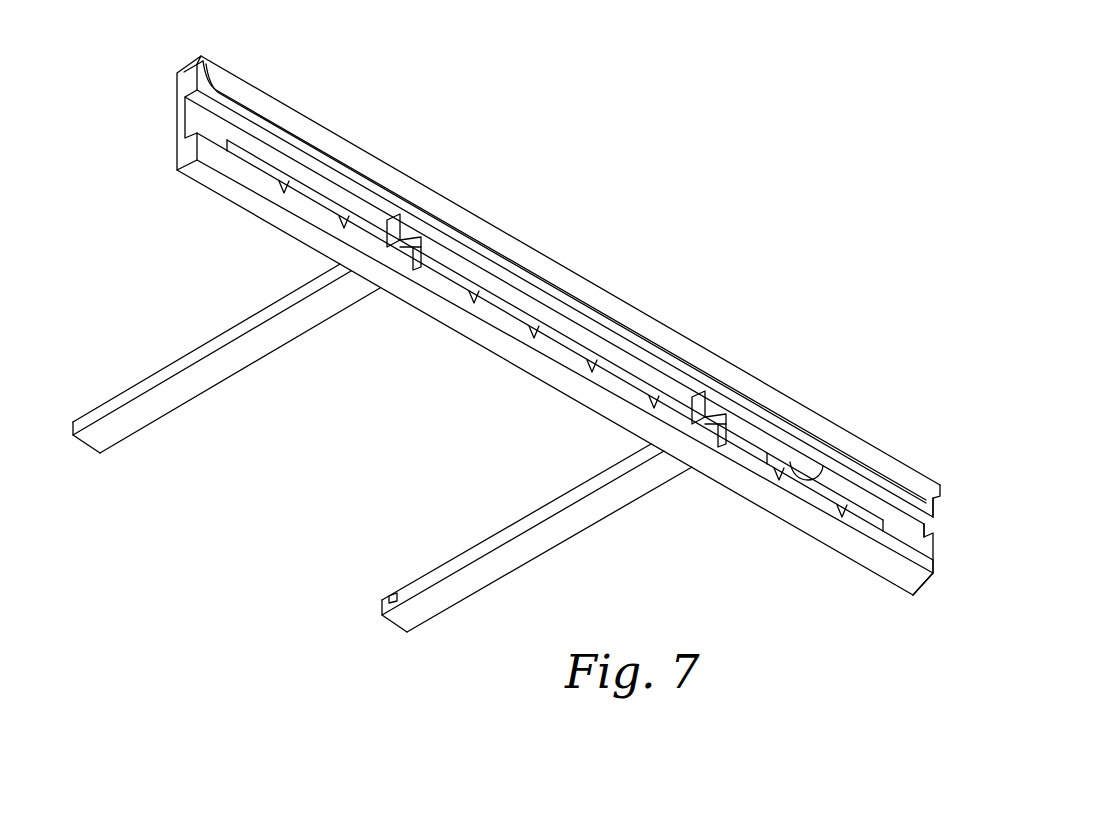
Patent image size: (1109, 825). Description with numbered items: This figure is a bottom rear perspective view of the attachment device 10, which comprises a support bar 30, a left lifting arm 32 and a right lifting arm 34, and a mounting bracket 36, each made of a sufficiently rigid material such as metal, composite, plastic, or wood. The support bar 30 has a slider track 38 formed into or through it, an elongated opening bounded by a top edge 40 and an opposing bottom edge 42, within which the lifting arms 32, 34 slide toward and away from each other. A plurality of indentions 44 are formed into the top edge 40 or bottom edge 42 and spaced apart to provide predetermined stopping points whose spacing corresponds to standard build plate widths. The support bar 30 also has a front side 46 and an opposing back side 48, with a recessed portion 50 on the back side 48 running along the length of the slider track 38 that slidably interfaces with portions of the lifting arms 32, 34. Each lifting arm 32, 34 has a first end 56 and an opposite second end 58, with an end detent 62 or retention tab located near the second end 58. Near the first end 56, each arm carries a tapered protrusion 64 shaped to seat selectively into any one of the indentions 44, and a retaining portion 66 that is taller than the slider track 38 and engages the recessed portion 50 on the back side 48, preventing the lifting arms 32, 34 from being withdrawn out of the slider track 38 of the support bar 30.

The attachment device 10 is at (730, 178).
The support bar 30 is at (197, 173).
The left lifting arm 32 is at (256, 352).
The right lifting arm 34 is at (552, 537).
The mounting bracket 36 is at (303, 122).
The slider track 38 is at (492, 283).
The top edge 40 is at (823, 466).
The bottom edge 42 is at (487, 303).
The indentions 44 is at (593, 378).
The front side 46 is at (177, 110).
The back side 48 is at (928, 565).
The recessed portion 50 is at (917, 533).
The first end 56 is at (405, 230).
The second end 58 is at (83, 456).
The end detent 62 is at (393, 596).
The protrusion 64 is at (421, 268).
The retaining portion 66 is at (422, 242).